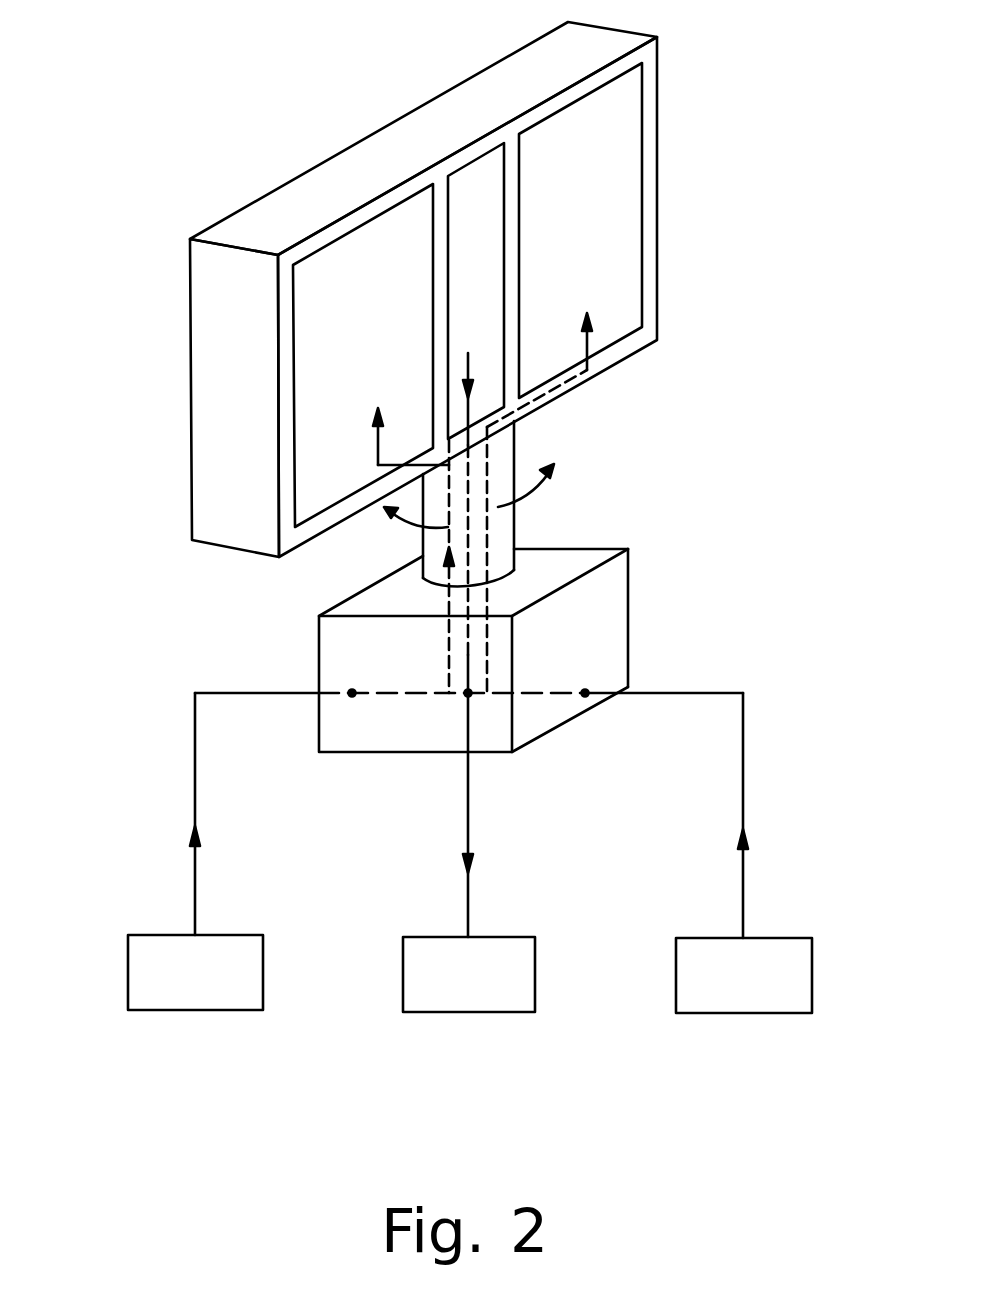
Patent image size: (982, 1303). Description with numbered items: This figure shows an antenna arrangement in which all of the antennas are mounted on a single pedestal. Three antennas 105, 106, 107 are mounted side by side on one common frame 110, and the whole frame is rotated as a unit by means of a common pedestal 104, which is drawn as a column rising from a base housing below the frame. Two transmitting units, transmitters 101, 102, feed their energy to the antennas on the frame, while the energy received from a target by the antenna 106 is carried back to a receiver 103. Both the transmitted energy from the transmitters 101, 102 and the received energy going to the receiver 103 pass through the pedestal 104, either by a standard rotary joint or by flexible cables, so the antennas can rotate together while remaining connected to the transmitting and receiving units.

The transmitter 101 is at (163, 1010).
The transmitter 102 is at (757, 1013).
The receiver 103 is at (425, 1012).
The common pedestal 104 is at (600, 630).
The antenna 105 is at (327, 357).
The antenna 106 is at (470, 193).
The antenna 107 is at (627, 255).
The frame 110 is at (237, 497).